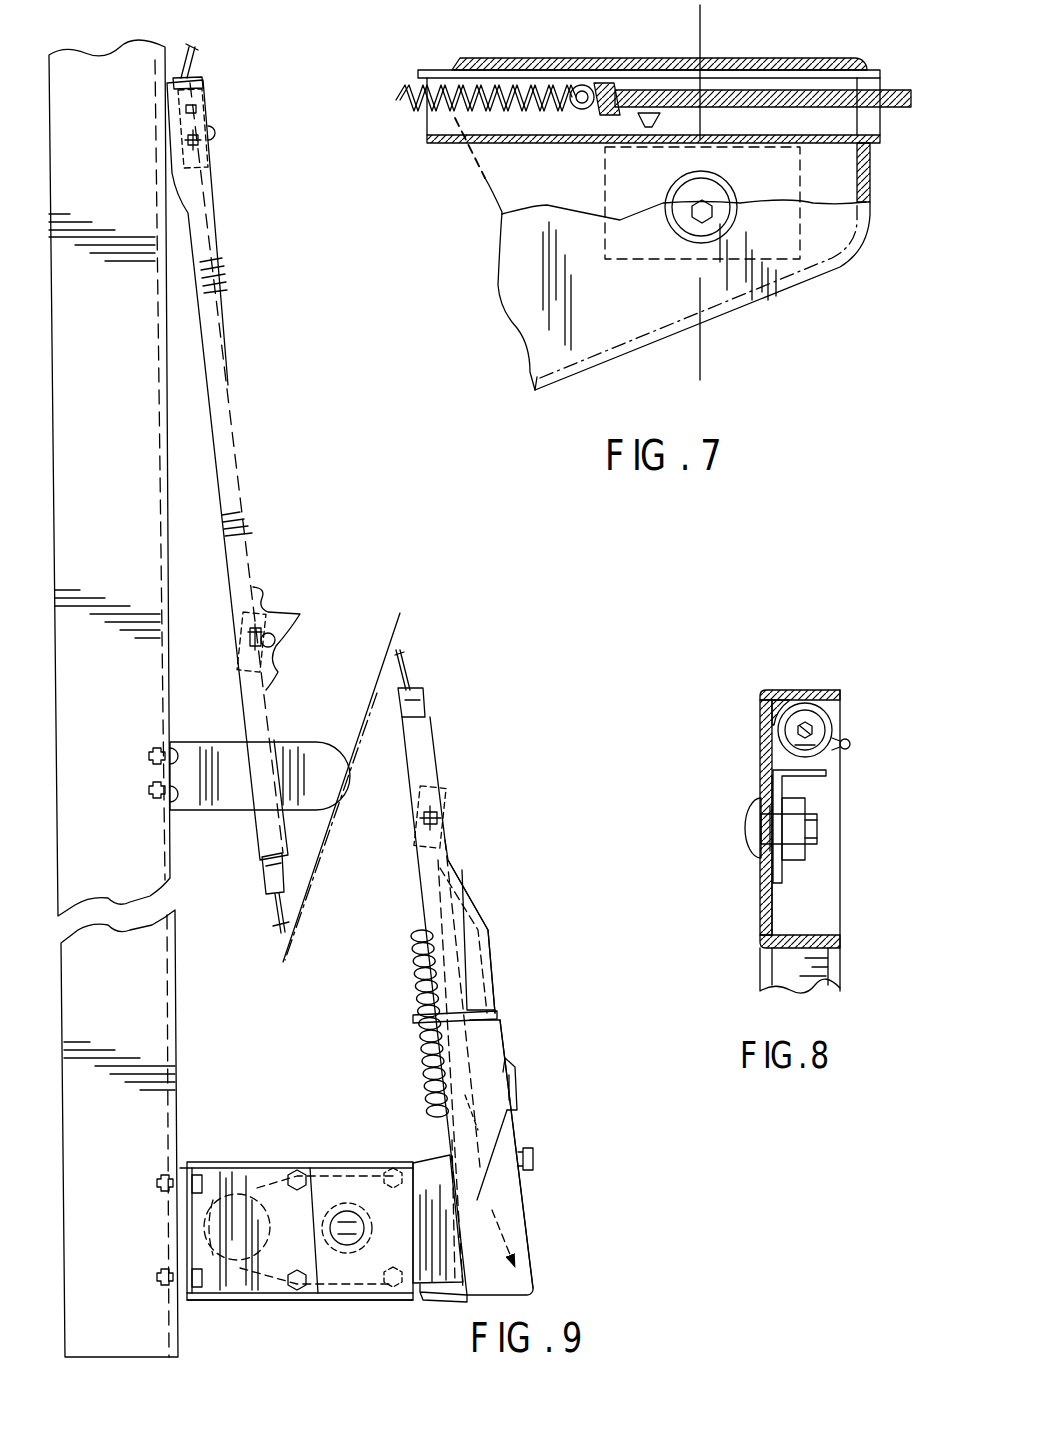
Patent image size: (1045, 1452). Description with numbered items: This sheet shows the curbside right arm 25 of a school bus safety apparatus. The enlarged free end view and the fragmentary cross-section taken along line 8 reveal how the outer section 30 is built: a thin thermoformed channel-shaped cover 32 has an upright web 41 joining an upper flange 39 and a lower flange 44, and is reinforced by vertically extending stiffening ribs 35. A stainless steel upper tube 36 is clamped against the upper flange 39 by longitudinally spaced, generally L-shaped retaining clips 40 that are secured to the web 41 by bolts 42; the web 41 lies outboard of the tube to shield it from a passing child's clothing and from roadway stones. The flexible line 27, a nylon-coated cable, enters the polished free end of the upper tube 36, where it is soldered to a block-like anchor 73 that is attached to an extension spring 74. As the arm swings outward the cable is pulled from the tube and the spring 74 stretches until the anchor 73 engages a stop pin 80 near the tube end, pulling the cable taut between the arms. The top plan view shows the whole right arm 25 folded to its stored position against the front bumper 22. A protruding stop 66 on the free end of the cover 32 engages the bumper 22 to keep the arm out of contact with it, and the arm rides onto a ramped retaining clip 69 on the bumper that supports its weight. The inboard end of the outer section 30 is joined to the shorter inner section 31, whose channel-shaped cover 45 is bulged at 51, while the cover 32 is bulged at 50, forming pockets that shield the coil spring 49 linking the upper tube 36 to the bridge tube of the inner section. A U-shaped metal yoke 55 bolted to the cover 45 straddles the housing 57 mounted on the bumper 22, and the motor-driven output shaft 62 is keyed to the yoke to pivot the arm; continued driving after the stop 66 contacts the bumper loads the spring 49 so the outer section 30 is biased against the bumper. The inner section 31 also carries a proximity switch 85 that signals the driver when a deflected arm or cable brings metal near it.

In FIG. 7, the section line 8— 8 is at (655, 21).
In FIG. 9, the front bumper 22 is at (168, 332).
In FIG. 7, the right arm 25 is at (880, 187).
In FIG. 8, the right arm 25 is at (754, 976).
In FIG. 9, the right arm 25 is at (468, 882).
In FIG. 7, the flexible line 27 is at (888, 90).
In FIG. 8, the flexible line 27 is at (816, 722).
In FIG. 9, the flexible line 27 is at (197, 60).
In FIG. 7, the outer section 30 is at (782, 300).
In FIG. 9, the outer section 30 is at (240, 377).
In FIG. 9, the inner section 31 is at (522, 1081).
In FIG. 7, the channel-shaped cover 32 is at (543, 333).
In FIG. 8, the channel-shaped cover 32 is at (752, 900).
In FIG. 9, the channel-shaped cover 32 is at (421, 874).
In FIG. 9, the stiffening ribs 35 is at (284, 678).
In FIG. 8, the upper tube 36 is at (830, 757).
In FIG. 9, the upper tube 36 is at (264, 874).
In FIG. 7, the upper flange 39 is at (556, 70).
In FIG. 8, the upper flange 39 is at (802, 690).
In FIG. 7, the retaining clips 40 is at (728, 147).
In FIG. 8, the retaining clips 40 is at (830, 780).
In FIG. 7, the upright web 41 is at (508, 238).
In FIG. 8, the upright web 41 is at (758, 730).
In FIG. 7, the bolts 42 is at (684, 226).
In FIG. 8, the bolts 42 is at (748, 822).
In FIG. 8, the lower flange 44 is at (828, 938).
In FIG. 9, the channel-shaped cover 45 is at (520, 1238).
In FIG. 9, the coil spring 49 is at (414, 1015).
In FIG. 9, the bulged end portion 50 is at (495, 970).
In FIG. 9, the bulged end portion 51 is at (502, 1037).
In FIG. 9, the yoke 55 is at (368, 1293).
In FIG. 9, the housing 57 is at (245, 1170).
In FIG. 9, the output shaft 62 is at (347, 1217).
In FIG. 9, the stop 66 is at (168, 110).
In FIG. 9, the ramped retaining clip 69 is at (312, 760).
In FIG. 7, the anchor 73 is at (606, 86).
In FIG. 8, the anchor 73 is at (790, 690).
In FIG. 7, the extension spring 74 is at (488, 80).
In FIG. 7, the stop pin 80 is at (645, 128).
In FIG. 8, the stop pin 80 is at (850, 744).
In FIG. 9, the proximity switch 85 is at (488, 1114).